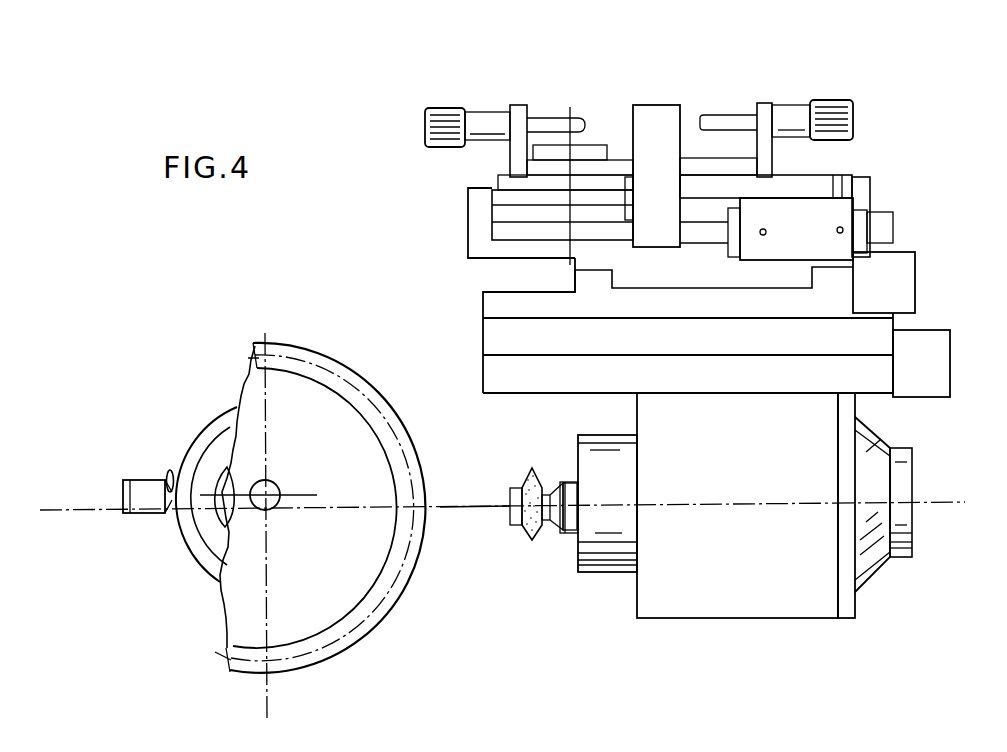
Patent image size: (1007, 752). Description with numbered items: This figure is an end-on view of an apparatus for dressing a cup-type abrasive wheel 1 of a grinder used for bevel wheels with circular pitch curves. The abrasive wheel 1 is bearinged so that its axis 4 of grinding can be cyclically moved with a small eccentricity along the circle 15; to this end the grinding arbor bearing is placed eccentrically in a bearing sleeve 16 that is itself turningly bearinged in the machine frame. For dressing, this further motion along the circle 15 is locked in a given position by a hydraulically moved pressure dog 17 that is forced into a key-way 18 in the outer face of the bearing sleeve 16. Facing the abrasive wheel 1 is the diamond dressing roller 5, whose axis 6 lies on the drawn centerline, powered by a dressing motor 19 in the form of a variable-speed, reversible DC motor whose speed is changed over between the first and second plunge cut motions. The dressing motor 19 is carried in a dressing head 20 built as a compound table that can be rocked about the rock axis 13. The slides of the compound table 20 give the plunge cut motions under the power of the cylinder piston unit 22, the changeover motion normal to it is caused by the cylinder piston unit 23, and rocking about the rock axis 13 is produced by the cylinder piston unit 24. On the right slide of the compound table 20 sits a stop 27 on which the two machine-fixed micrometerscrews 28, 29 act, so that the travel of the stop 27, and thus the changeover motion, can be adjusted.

The cup-type abrasive wheel 1 is at (372, 448).
The axis of grinding 4 is at (268, 512).
The dressing roller 5 is at (525, 537).
The axis of dressing wheel 6 is at (497, 507).
The rock axis 13 is at (572, 110).
The circle 15 is at (280, 487).
The bearing sleeve 16 is at (188, 565).
The pressure dog 17 is at (122, 490).
The key-way 18 is at (168, 473).
The dressing motor 19 is at (612, 545).
The dressing head 20 is at (448, 313).
The cylinder piston unit 22 is at (945, 388).
The cylinder piston unit 23 is at (843, 212).
The cylinder piston unit 24 is at (830, 176).
The stop 27 is at (665, 112).
The micrometerscrew 28 is at (490, 117).
The micrometerscrew 29 is at (792, 115).